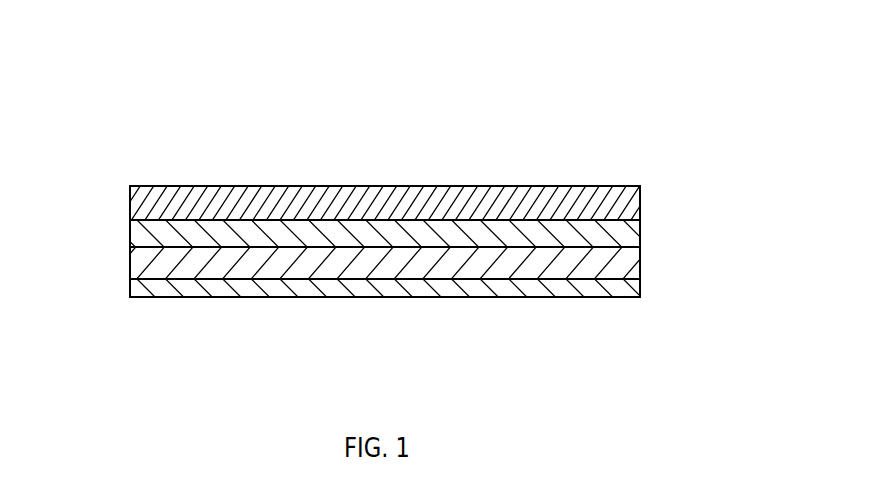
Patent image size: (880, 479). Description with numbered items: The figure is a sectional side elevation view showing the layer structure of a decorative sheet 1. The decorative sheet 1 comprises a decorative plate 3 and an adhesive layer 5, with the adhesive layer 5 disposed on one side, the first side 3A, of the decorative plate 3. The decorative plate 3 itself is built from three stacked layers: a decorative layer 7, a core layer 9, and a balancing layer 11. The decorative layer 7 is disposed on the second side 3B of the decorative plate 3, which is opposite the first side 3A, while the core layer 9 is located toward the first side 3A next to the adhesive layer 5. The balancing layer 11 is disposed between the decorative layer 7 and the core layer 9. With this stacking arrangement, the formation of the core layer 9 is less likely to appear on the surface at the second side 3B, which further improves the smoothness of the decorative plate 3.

The decorative sheet 1 is at (597, 110).
The decorative plate 3 is at (797, 180).
The first side 3A is at (116, 278).
The second side 3B is at (116, 192).
The adhesive layer 5 is at (603, 290).
The decorative layer 7 is at (640, 187).
The core layer 9 is at (603, 262).
The balancing layer 11 is at (603, 233).